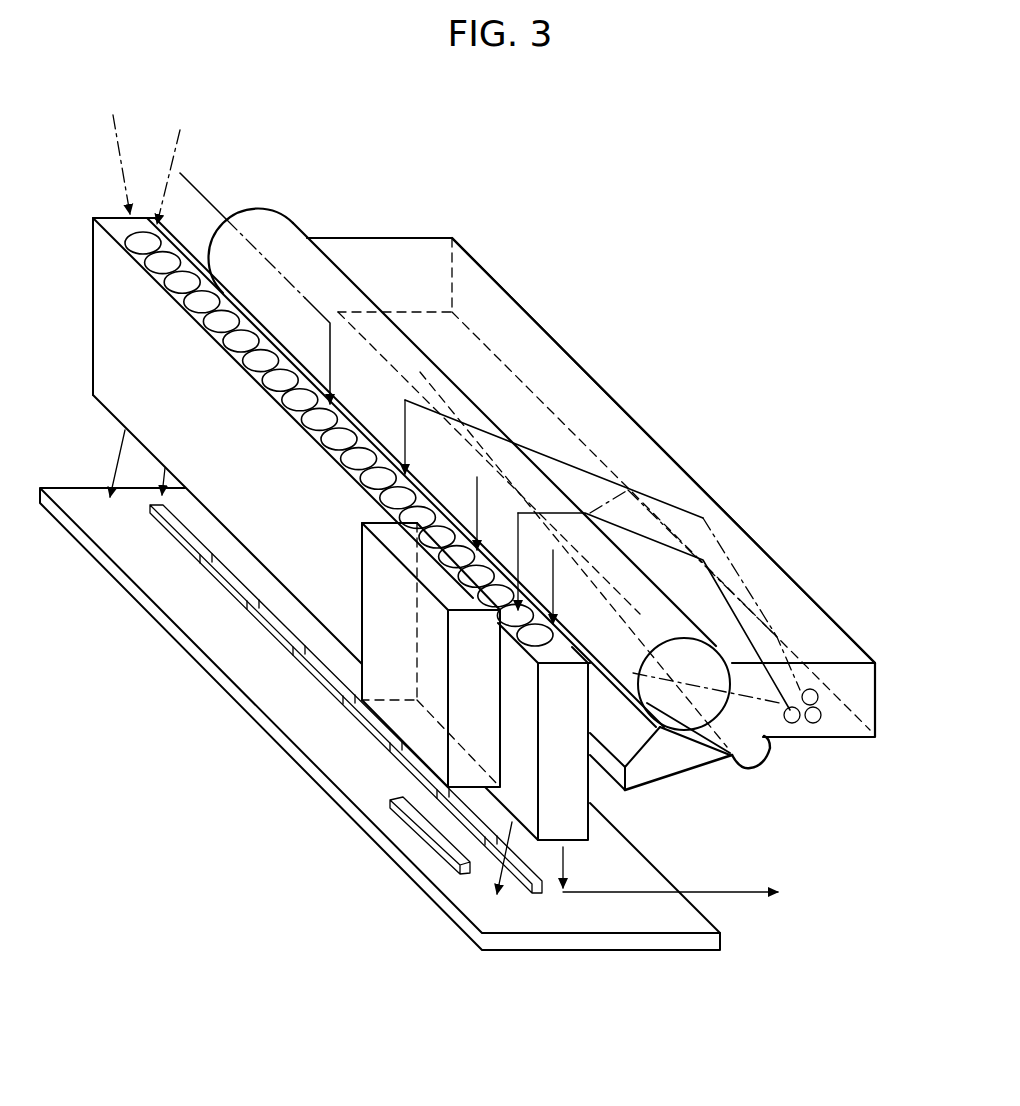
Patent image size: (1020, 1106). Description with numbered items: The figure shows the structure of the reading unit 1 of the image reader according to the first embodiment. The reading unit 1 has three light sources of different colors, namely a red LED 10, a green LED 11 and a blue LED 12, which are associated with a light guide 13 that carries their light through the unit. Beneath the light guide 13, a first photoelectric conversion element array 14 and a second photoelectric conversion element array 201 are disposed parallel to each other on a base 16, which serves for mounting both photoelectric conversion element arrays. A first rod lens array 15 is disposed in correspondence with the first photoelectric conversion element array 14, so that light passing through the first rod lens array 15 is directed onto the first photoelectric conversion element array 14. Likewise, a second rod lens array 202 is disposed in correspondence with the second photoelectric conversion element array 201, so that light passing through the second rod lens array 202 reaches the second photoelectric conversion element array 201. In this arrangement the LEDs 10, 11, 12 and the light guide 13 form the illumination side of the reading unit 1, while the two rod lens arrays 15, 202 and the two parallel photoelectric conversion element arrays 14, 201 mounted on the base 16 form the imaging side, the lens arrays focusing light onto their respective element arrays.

The reading unit 1 is at (588, 318).
The red LED 10 is at (820, 698).
The green LED 11 is at (818, 725).
The blue LED 12 is at (791, 724).
The light guide 13 is at (637, 421).
The first photoelectric conversion element array 14 is at (262, 620).
The first rod lens array 15 is at (93, 347).
The base 16 is at (410, 868).
The second photoelectric conversion element array 201 is at (390, 798).
The second rod lens array 202 is at (360, 566).